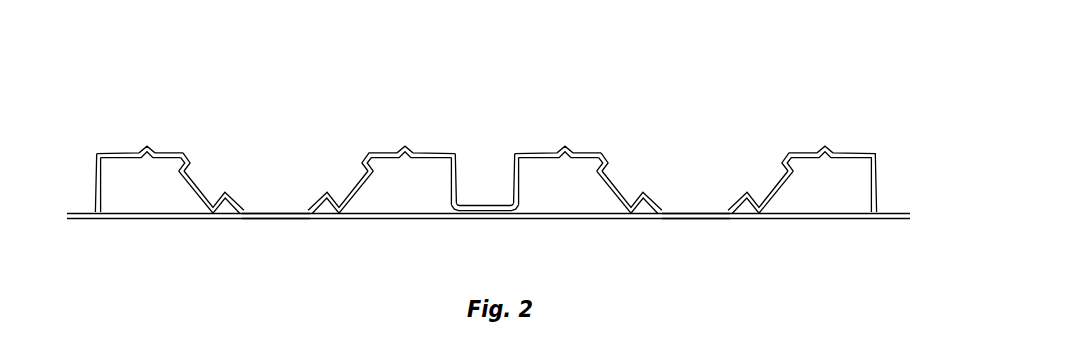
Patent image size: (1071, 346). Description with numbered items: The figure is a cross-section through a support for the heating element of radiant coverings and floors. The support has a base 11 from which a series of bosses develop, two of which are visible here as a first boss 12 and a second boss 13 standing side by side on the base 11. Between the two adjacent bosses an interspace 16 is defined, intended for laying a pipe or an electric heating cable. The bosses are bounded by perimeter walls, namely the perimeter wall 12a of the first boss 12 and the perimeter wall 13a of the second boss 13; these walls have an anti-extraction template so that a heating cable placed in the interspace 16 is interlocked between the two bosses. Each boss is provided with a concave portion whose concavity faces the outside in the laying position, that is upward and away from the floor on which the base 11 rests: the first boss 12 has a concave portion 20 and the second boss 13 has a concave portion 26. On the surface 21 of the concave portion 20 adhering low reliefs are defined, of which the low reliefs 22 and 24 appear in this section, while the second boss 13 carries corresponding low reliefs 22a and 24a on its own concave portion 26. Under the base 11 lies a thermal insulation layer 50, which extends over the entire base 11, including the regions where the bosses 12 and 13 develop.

The base 11 is at (88, 211).
The first boss 12 is at (252, 149).
The perimeter wall of first boss 12a is at (455, 188).
The second boss 13 is at (695, 150).
The perimeter wall of second boss 13a is at (517, 188).
The interspace 16 is at (487, 182).
The concave portion of first boss 20 is at (275, 212).
The surface of concave portion 21 is at (183, 158).
The adhering low relief 22 is at (200, 190).
The adhering low relief of second boss 22a is at (618, 190).
The adhering low relief 24 is at (355, 192).
The adhering low relief of second boss 24a is at (778, 188).
The concave portion of second boss 26 is at (693, 213).
The thermal insulation layer 50 is at (140, 216).